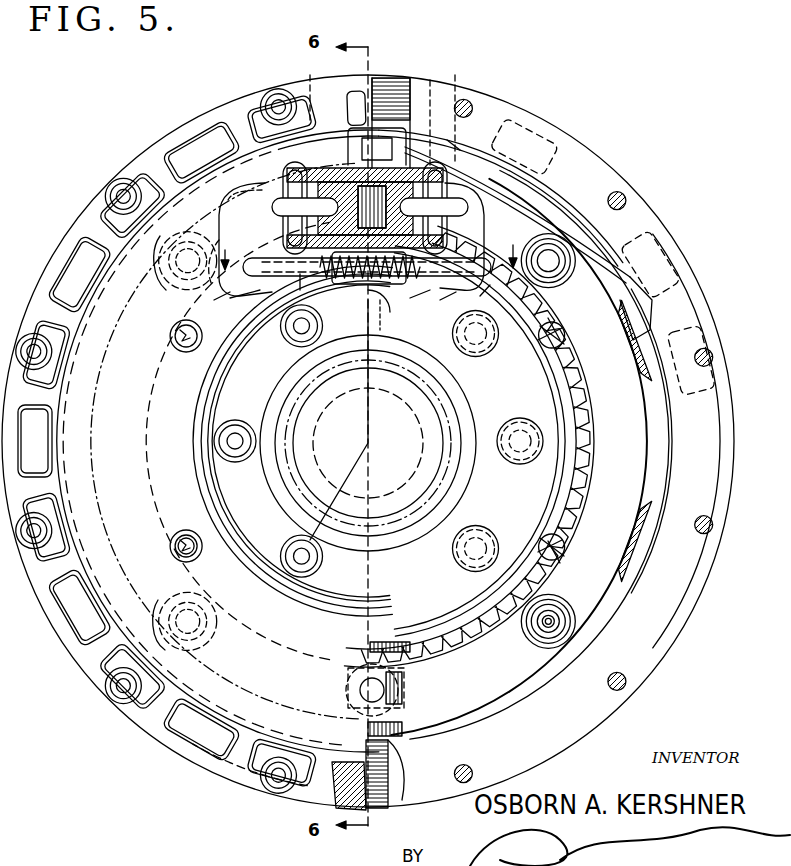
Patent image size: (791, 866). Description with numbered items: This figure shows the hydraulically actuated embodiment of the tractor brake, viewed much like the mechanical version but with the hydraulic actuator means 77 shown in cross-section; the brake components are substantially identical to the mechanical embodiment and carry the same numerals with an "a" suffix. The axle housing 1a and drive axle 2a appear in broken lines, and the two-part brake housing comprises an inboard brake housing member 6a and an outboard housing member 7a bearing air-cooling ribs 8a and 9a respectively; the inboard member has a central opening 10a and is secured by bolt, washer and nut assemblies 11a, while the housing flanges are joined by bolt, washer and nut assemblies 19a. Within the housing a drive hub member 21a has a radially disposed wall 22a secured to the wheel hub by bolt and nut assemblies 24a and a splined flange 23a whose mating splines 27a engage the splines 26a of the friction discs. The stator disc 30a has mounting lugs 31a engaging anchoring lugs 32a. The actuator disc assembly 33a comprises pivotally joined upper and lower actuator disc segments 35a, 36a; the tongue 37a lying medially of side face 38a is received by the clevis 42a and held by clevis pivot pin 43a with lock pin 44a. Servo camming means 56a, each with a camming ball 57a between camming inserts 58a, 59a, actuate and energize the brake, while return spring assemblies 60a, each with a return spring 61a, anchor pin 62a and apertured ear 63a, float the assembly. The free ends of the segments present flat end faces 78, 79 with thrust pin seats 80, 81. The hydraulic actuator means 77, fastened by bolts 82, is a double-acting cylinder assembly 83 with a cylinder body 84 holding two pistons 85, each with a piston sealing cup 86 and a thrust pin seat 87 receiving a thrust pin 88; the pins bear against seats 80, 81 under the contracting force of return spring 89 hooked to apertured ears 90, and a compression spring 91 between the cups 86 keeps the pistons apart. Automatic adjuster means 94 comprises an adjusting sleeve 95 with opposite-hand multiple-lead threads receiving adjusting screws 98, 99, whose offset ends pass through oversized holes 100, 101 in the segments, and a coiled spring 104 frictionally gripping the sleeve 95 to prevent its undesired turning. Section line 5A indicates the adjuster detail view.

The axle housing 1a is at (390, 540).
The drive axle 2a is at (368, 420).
The section line 5A is at (375, 246).
The inboard brake housing member 6a is at (198, 210).
The outboard housing member 7a is at (660, 244).
The air-cooling ribs 8a is at (225, 765).
The air-cooling ribs 9a is at (518, 125).
The central opening 10a is at (282, 388).
The bolt, washer and nut assemblies 11a is at (292, 547).
The bolt, washer and nut assemblies 19a is at (108, 194).
The drive hub member 21a is at (479, 441).
The radially disposed wall 22a is at (480, 487).
The splined flange 23a is at (500, 604).
The bolt and nut assemblies 24a is at (514, 418).
The splines 26a is at (430, 650).
The mating splines 27a is at (408, 640).
The stator disc 30a is at (640, 524).
The mounting lugs 31a is at (622, 330).
The anchoring lugs 32a is at (80, 290).
The actuator disc assembly 33a is at (527, 220).
The upper actuator disc segment 35a is at (190, 222).
The lower actuator disc segment 36a is at (585, 185).
The apertured tongue 37a is at (402, 702).
The side face 38a is at (513, 683).
The clevis 42a is at (290, 800).
The clevis pivot pin 43a is at (384, 740).
The lock pin 44a is at (398, 688).
The servo camming means 56a is at (560, 240).
The camming ball 57a is at (556, 622).
The camming insert 58a is at (216, 618).
The camming insert 59a is at (550, 640).
The return spring assembly 60a is at (184, 528).
The return spring 61a is at (540, 340).
The anchor pin 62a is at (186, 352).
The apertured ear 63a is at (550, 345).
The hydraulic actuator means 77 is at (432, 165).
The flat end face 78 is at (262, 220).
The flat end face 79 is at (462, 236).
The actuator thrust pin seat 80 is at (282, 180).
The actuator thrust pin seat 81 is at (448, 176).
The bolts 82 is at (308, 100).
The double-acting cylinder assembly 83 is at (300, 166).
The cylinder body 84 is at (346, 180).
The piston 85 is at (422, 140).
The piston sealing cup 86 is at (377, 146).
The thrust pin seat 87 is at (367, 262).
The thrust pin 88 is at (370, 207).
The return spring 89 is at (306, 282).
The apertured ear 90 is at (328, 302).
The compression spring 91 is at (365, 208).
The automatic adjuster means 94 is at (340, 280).
The adjusting sleeve 95 is at (378, 312).
The adjusting screw 98 is at (215, 307).
The adjusting screw 99 is at (442, 307).
The oversized hole 100 is at (190, 286).
The oversized hole 101 is at (480, 299).
The coiled spring 104 is at (372, 316).